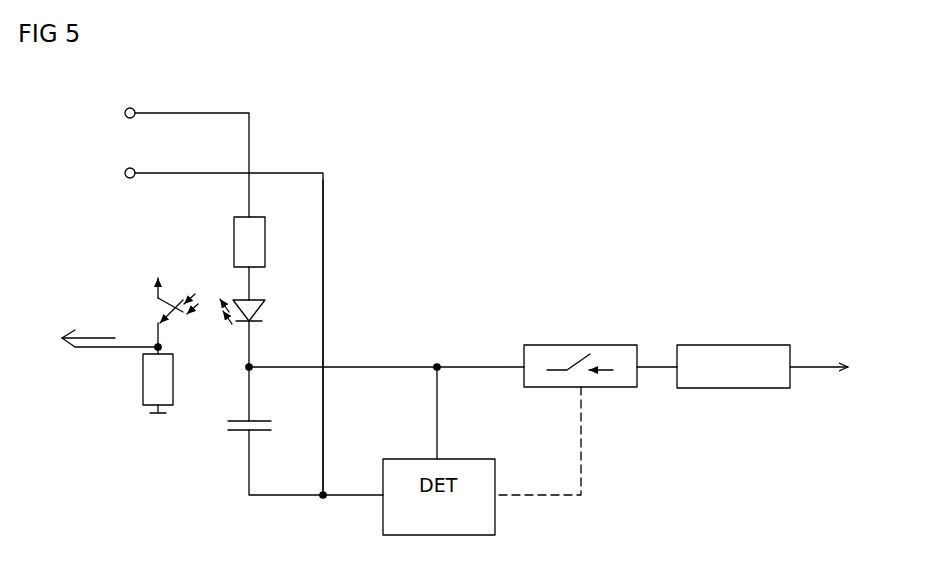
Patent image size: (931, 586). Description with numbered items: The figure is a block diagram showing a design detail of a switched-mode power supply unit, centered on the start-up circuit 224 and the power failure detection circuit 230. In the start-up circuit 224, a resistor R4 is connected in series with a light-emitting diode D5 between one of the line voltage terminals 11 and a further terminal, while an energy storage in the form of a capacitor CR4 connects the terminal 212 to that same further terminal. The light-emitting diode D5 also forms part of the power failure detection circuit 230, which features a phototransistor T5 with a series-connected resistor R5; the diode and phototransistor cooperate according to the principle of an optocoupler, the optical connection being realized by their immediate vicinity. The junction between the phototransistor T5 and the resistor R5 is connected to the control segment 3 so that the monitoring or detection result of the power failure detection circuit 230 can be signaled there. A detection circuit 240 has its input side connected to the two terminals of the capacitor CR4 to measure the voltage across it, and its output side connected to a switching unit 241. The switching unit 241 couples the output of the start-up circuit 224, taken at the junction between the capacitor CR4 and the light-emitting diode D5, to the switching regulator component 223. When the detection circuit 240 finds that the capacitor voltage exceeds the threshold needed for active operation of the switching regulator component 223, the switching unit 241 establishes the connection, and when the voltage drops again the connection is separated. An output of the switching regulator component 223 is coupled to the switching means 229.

The line voltage terminal 11 is at (125, 113).
The terminal 212 is at (125, 173).
The start-up circuit 224 is at (305, 272).
The resistor R4 is at (234, 250).
The light-emitting diode D5 is at (245, 324).
The phototransistor T5 is at (156, 298).
The control segment 3 is at (110, 327).
The resistor R5 is at (143, 385).
The power failure detection circuit 230 is at (208, 382).
The capacitor CR4 is at (263, 431).
The switching unit 241 is at (588, 344).
The switching regulator component 223 is at (737, 389).
The switching means 229 is at (842, 355).
The detection circuit 240 is at (497, 526).